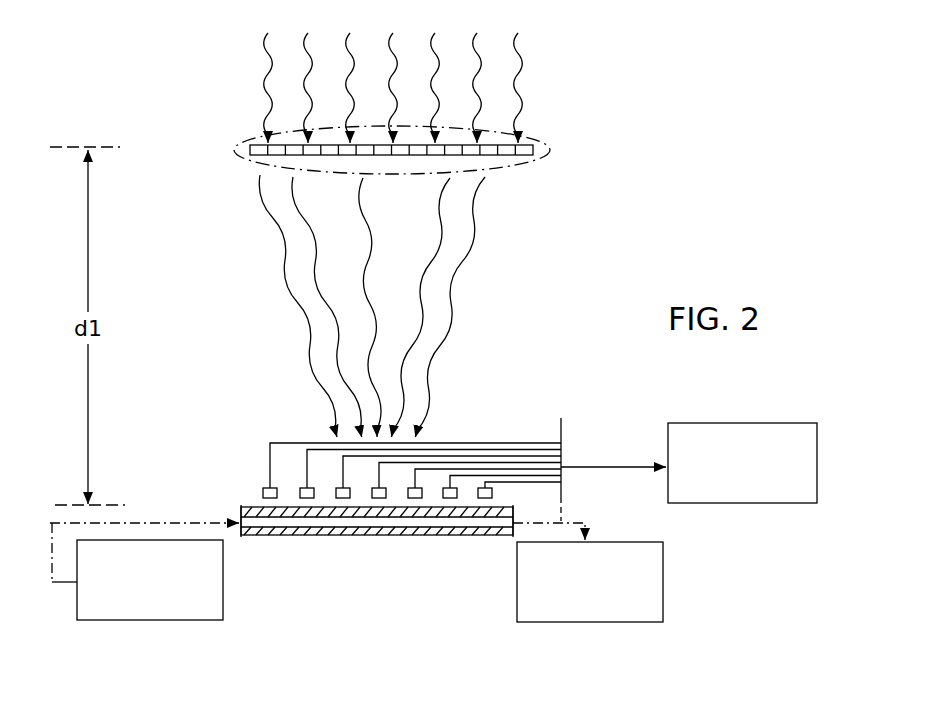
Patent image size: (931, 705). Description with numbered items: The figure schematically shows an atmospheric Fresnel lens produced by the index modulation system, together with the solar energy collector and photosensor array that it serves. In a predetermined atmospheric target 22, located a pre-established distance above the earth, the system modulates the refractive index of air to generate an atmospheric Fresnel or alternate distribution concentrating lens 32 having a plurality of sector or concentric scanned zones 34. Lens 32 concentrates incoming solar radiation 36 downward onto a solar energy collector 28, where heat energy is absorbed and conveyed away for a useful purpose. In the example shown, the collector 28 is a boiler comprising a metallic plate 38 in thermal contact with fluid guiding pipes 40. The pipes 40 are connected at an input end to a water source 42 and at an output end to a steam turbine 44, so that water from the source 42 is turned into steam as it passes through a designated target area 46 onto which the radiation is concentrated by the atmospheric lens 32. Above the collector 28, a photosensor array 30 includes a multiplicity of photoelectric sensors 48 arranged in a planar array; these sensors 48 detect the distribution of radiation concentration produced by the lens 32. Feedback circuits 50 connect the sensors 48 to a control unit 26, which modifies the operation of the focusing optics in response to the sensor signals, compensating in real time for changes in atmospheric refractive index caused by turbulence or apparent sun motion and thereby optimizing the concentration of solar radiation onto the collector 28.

The atmospheric target 22 is at (552, 148).
The control unit 26 is at (738, 423).
The solar energy collector 28 is at (264, 541).
The photosensor array 30 is at (260, 492).
The atmospheric Fresnel lens 32 is at (506, 159).
The scanned zones 34 is at (290, 156).
The incoming solar radiation 36 is at (305, 97).
The metallic plate 38 is at (303, 536).
The fluid guiding pipes 40 is at (368, 518).
The water source 42 is at (172, 620).
The steam turbine 44 is at (611, 622).
The target area 46 is at (440, 421).
The photoelectric sensors 48 is at (484, 499).
The feedback circuits 50 is at (489, 441).